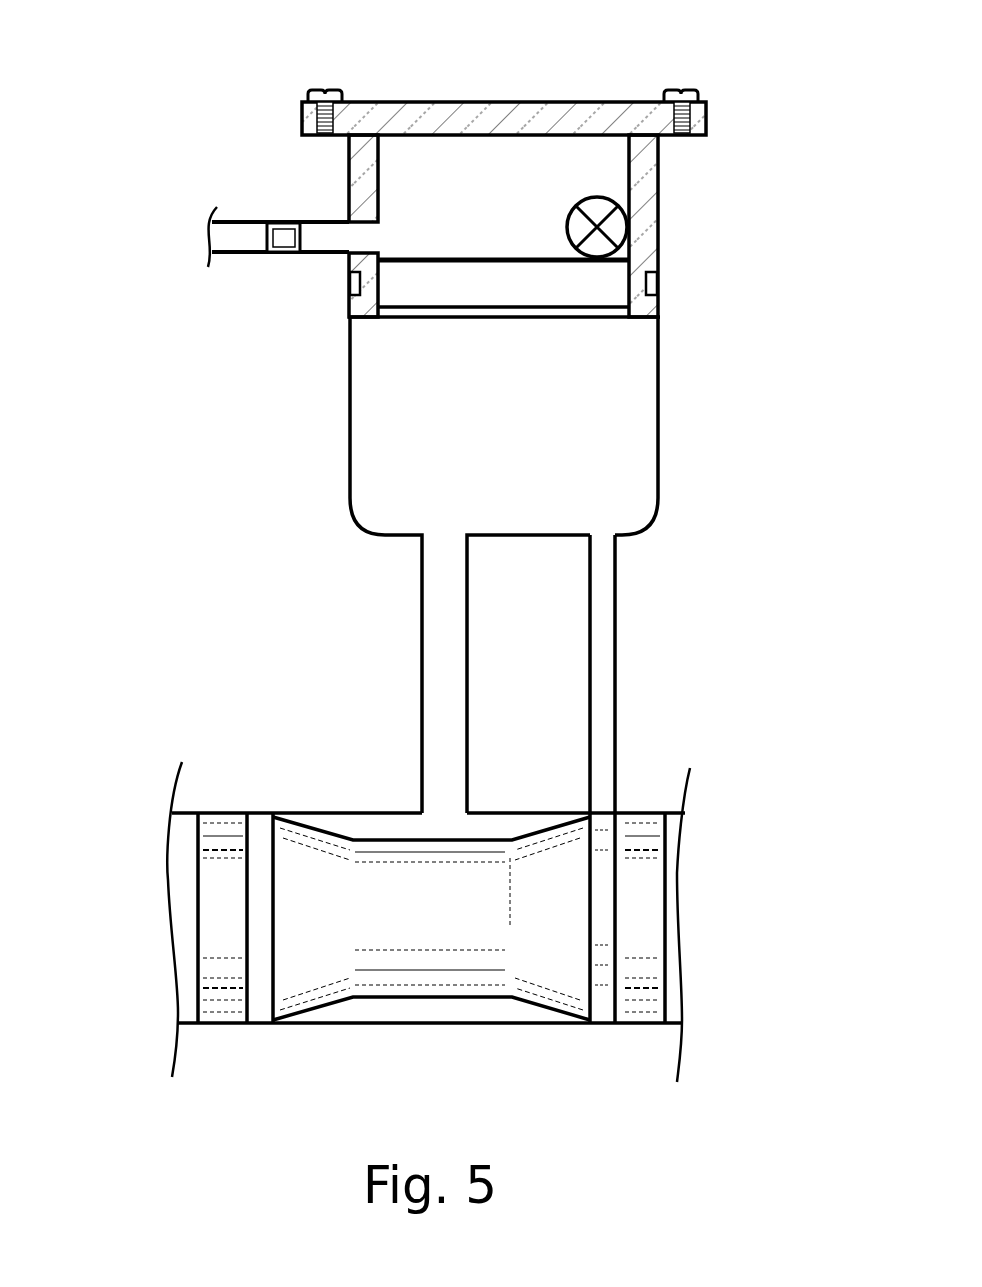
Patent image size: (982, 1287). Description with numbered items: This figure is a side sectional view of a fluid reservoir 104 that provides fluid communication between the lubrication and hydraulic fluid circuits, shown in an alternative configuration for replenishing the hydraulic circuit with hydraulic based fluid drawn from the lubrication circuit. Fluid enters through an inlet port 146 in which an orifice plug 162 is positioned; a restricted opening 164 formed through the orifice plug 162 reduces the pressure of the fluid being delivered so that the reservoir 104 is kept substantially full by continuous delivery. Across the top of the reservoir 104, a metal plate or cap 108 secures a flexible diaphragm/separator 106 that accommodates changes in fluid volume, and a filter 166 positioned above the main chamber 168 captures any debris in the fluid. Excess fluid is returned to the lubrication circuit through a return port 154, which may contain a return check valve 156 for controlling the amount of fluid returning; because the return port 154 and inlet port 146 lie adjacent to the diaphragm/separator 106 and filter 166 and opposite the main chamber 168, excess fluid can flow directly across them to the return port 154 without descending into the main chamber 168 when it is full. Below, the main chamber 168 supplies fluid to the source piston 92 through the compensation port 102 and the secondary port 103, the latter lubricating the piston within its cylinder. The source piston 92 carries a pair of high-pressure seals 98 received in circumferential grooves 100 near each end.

The source piston 92 is at (450, 930).
The high-pressure seals 98 is at (222, 828).
The circumferential grooves 100 is at (230, 988).
The compensation port 102 is at (617, 667).
The secondary port 103 is at (418, 667).
The fluid reservoir 104 is at (660, 392).
The flexible diaphragm/separator 106 is at (588, 313).
The metal plate or cap 108 is at (528, 102).
The inlet port 146 is at (237, 242).
The return port 154 is at (610, 200).
The return check valve 156 is at (617, 235).
The orifice plug 162 is at (283, 222).
The restricted opening 164 is at (273, 252).
The filter 166 is at (481, 265).
The main chamber 168 is at (608, 458).